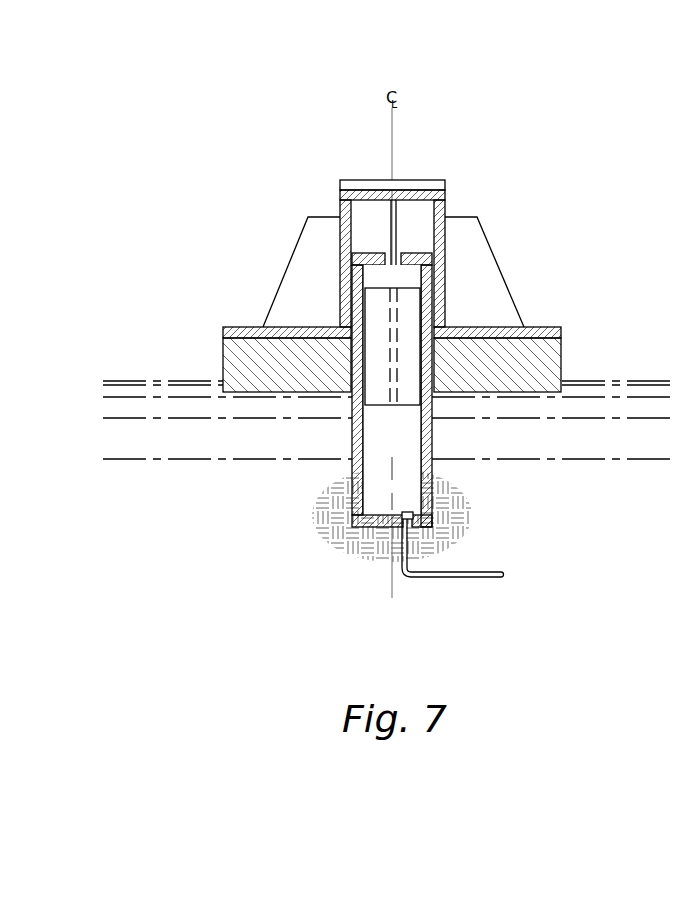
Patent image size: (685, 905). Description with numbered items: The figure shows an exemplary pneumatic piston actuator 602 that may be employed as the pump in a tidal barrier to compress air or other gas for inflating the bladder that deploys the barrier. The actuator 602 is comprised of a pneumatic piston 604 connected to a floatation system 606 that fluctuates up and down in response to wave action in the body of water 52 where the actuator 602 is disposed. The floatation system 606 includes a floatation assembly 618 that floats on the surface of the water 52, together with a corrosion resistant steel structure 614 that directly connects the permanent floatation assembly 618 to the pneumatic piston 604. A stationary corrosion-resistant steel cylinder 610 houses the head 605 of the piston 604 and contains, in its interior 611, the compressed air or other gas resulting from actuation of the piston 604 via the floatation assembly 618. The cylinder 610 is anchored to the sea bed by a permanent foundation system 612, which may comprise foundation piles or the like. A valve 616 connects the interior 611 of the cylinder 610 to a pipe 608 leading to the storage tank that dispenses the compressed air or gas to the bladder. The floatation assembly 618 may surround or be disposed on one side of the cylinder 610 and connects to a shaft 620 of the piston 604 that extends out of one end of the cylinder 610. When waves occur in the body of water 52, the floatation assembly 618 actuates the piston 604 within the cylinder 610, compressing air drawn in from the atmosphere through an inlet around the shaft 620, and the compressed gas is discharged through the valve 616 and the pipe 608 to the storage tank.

The pneumatic piston actuator 602 is at (403, 335).
The pneumatic piston 604 is at (417, 240).
The head of the piston 605 is at (407, 312).
The floatation system 606 is at (427, 300).
The pipe 608 is at (482, 572).
The cylinder 610 is at (353, 448).
The interior of the cylinder 611 is at (405, 462).
The foundation system 612 is at (350, 538).
The corrosion resistant steel structure 614 is at (303, 232).
The valve 616 is at (415, 517).
The floatation assembly 618 is at (562, 358).
The shaft 620 is at (398, 230).
The body of water 52 is at (613, 449).